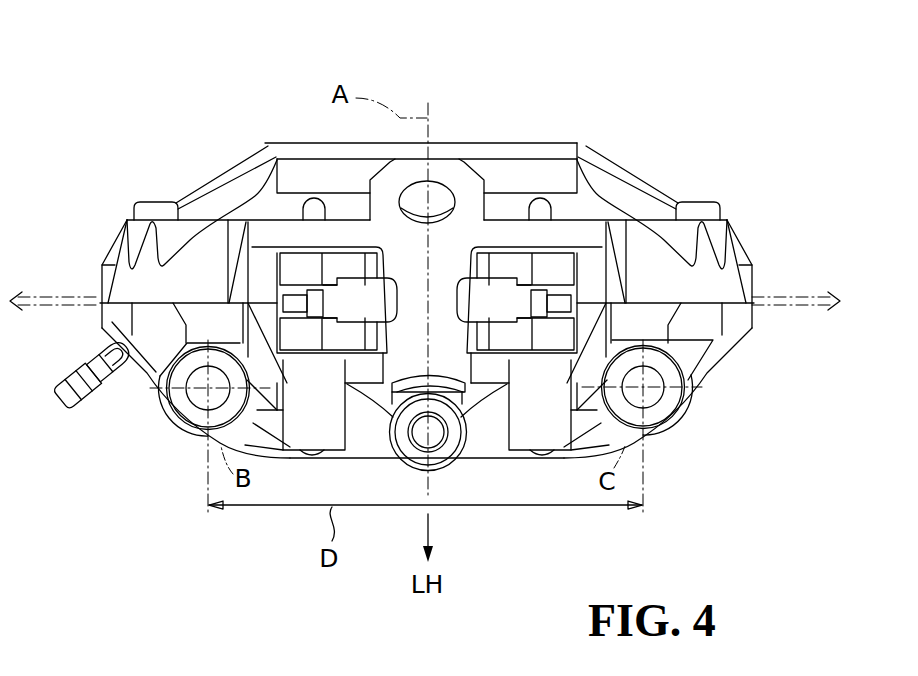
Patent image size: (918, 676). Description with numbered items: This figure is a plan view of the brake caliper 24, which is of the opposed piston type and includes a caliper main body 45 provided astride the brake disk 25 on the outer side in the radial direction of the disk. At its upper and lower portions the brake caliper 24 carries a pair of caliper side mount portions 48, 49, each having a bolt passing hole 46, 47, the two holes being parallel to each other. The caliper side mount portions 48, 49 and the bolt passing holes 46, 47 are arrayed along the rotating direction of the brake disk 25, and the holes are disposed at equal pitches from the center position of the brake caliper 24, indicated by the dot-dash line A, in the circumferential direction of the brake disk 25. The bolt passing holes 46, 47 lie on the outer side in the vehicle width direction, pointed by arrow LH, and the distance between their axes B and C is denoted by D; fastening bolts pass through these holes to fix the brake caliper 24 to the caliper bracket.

The brake caliper 24 is at (471, 112).
The caliper main body 45 is at (546, 130).
The brake disk 25 is at (800, 297).
The bolt passing hole 46 is at (195, 397).
The bolt passing hole 47 is at (650, 398).
The caliper side mount portion 48 is at (182, 433).
The caliper side mount portion 49 is at (665, 430).